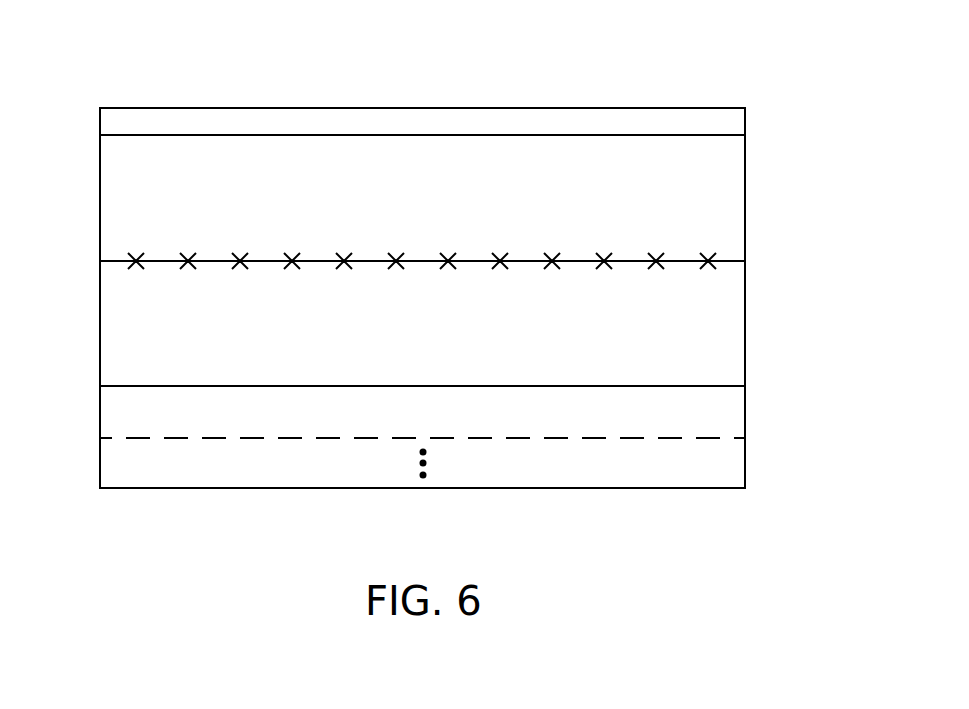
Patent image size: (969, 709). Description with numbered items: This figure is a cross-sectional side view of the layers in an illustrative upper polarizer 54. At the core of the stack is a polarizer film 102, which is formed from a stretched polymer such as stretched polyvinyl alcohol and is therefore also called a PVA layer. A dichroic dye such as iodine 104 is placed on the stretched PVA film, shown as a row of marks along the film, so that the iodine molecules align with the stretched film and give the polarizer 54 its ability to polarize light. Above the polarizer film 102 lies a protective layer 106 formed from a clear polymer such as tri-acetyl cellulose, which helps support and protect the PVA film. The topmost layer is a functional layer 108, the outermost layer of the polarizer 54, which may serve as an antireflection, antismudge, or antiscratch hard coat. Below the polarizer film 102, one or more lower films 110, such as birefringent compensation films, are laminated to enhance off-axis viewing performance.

The upper polarizer 54 is at (783, 30).
The functional layer 108 is at (145, 122).
The protective layer 106 is at (733, 188).
The polarizer film 102 is at (733, 321).
The iodine 104 is at (343, 263).
The lower films 110 is at (92, 386).